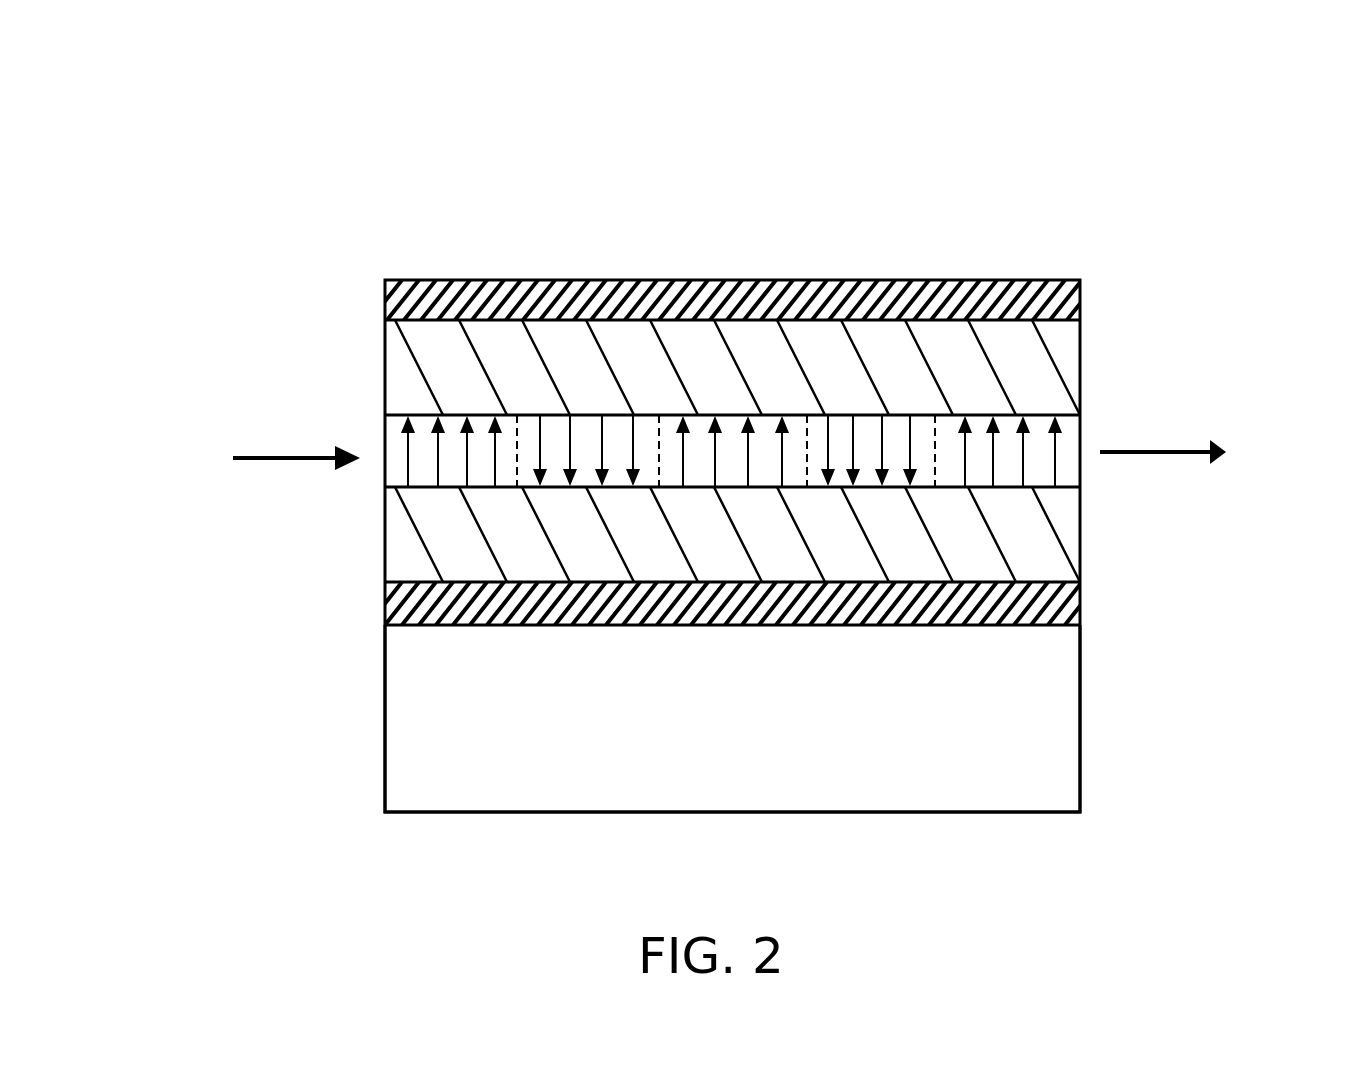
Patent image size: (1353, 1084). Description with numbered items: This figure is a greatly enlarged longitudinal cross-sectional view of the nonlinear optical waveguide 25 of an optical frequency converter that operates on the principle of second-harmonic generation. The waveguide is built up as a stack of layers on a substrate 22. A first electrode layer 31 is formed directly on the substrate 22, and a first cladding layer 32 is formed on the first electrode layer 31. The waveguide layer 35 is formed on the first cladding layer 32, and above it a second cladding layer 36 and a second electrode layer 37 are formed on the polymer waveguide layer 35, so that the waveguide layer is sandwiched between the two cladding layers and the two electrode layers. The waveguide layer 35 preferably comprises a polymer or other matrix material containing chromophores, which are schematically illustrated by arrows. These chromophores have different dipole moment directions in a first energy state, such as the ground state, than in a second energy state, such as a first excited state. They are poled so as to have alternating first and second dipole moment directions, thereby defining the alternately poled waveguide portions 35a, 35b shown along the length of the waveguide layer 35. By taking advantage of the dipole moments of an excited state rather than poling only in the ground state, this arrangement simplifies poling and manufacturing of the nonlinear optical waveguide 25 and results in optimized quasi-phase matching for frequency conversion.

The substrate 22 is at (427, 753).
The nonlinear optical waveguide 25 is at (1083, 234).
The first electrode layer 31 is at (383, 610).
The first cladding layer 32 is at (407, 560).
The waveguide layer 35 is at (1084, 433).
The alternately poled waveguide portion 35a is at (445, 432).
The alternately poled waveguide portion 35b is at (580, 445).
The second cladding layer 36 is at (420, 370).
The second electrode layer 37 is at (383, 293).